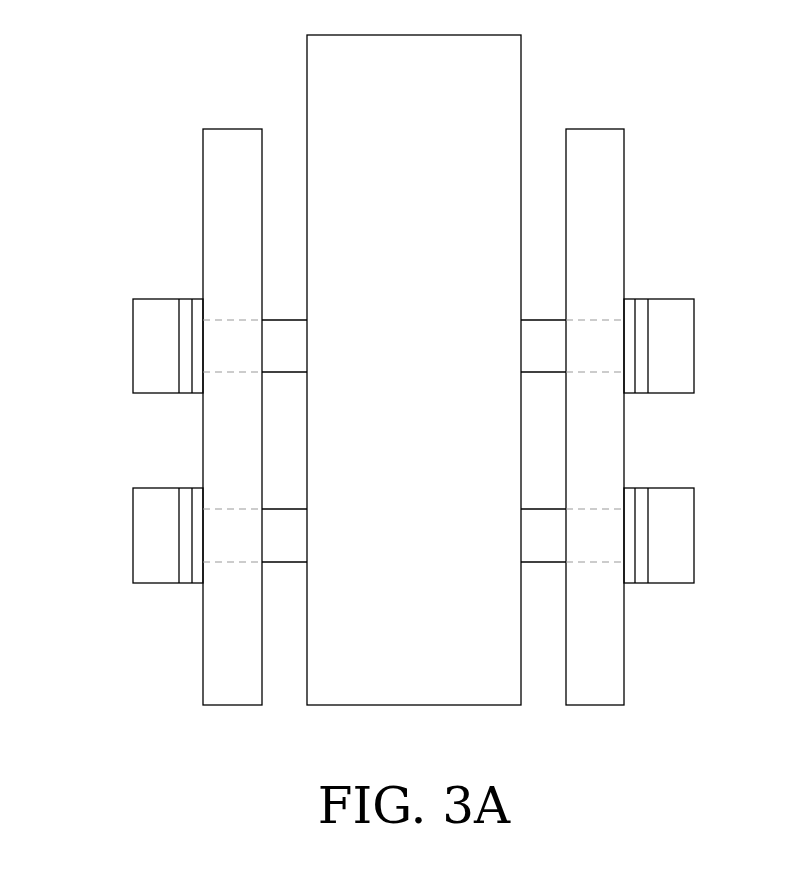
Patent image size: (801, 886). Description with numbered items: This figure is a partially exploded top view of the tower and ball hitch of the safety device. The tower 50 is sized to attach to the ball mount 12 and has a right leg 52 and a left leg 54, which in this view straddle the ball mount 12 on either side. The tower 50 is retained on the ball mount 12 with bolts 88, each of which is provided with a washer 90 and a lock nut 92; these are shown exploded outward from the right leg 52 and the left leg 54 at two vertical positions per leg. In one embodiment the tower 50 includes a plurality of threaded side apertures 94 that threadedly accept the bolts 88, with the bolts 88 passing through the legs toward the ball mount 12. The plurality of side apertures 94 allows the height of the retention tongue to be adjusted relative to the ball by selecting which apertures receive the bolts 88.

The ball mount 12 is at (500, 73).
The tower 50 is at (656, 160).
The right leg 52 is at (624, 447).
The left leg 54 is at (203, 447).
The bolts 88 is at (143, 362).
The washer 90 is at (198, 306).
The lock nut 92 is at (187, 387).
The threaded side apertures 94 is at (233, 332).